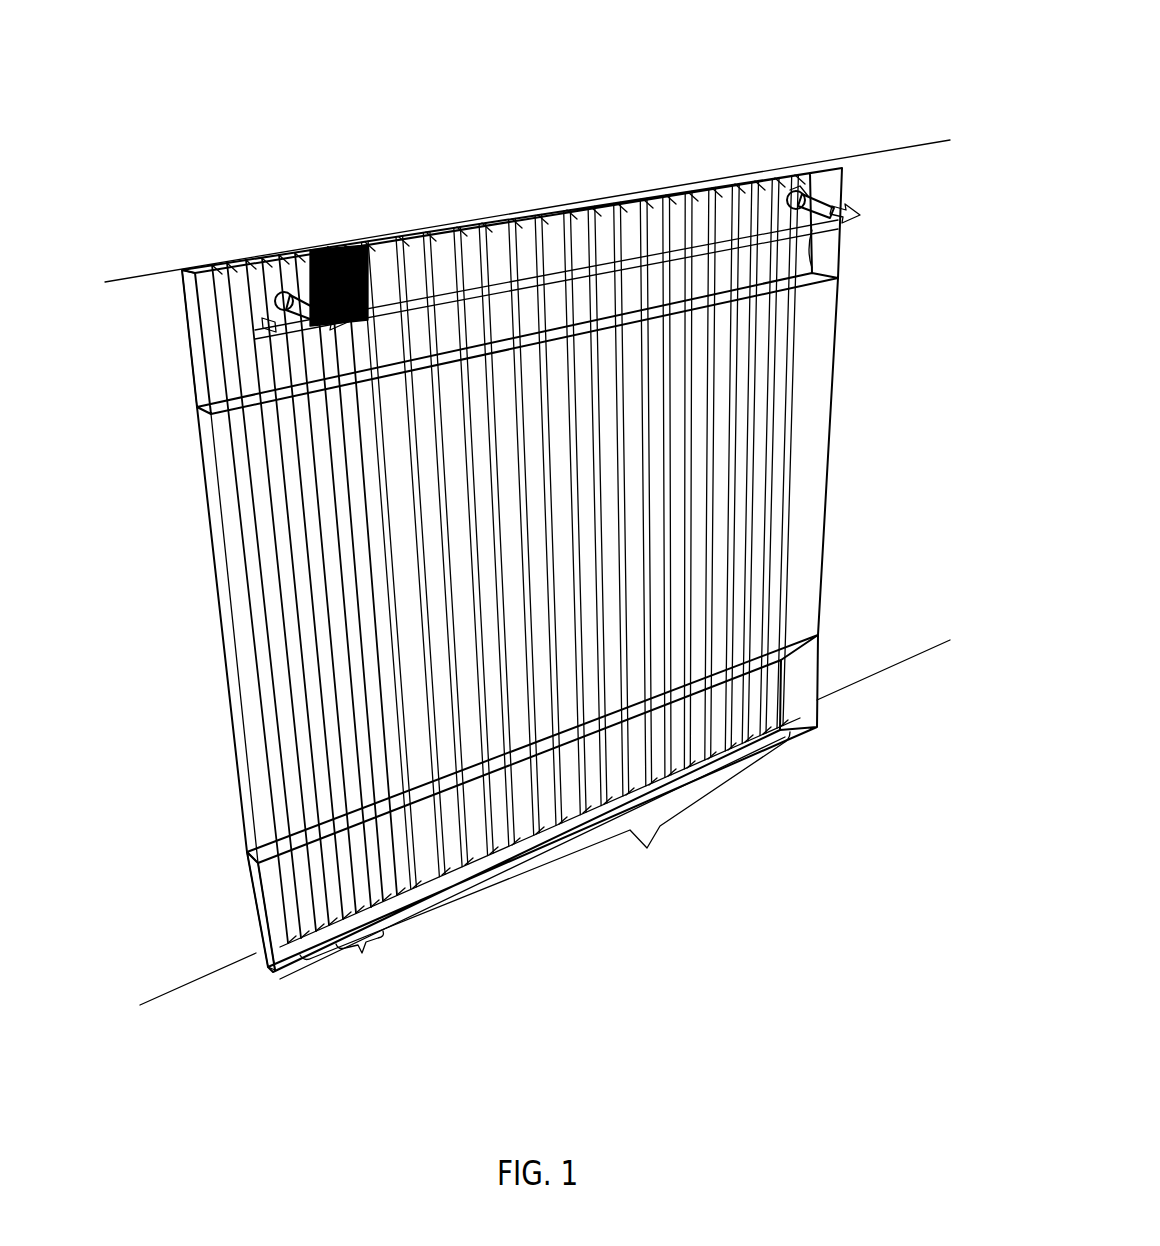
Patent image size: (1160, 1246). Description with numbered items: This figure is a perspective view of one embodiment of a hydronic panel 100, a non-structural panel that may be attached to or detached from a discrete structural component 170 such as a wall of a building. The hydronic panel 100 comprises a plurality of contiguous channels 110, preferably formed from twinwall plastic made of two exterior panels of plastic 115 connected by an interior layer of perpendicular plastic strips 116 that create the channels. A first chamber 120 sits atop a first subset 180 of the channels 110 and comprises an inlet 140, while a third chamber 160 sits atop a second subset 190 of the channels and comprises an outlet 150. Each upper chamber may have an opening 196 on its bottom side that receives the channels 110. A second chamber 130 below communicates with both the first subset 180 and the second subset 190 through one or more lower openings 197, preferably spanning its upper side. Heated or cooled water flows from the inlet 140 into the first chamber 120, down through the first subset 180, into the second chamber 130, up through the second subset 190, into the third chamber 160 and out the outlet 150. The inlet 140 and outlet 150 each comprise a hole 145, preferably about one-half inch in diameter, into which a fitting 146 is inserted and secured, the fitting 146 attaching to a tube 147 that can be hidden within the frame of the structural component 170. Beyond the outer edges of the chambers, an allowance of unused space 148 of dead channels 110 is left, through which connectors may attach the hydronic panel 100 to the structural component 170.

The hydronic panel 100 is at (225, 148).
The plurality of contiguous channels 110 is at (720, 490).
The exterior panels of plastic 115 is at (232, 698).
The perpendicular plastic strips 116 is at (680, 240).
The first chamber 120 is at (268, 300).
The second chamber 130 is at (405, 885).
The inlet 140 is at (197, 273).
The hole 145 is at (284, 290).
The fitting 146 is at (365, 285).
The tube 147 is at (270, 322).
The allowance of unused space 148 is at (795, 592).
The outlet 150 is at (790, 188).
The third chamber 160 is at (478, 255).
The discrete structural component 170 is at (900, 170).
The first subset 180 is at (365, 961).
The second subset 190 is at (545, 845).
The opening 196 is at (573, 275).
The lower openings 197 is at (262, 870).